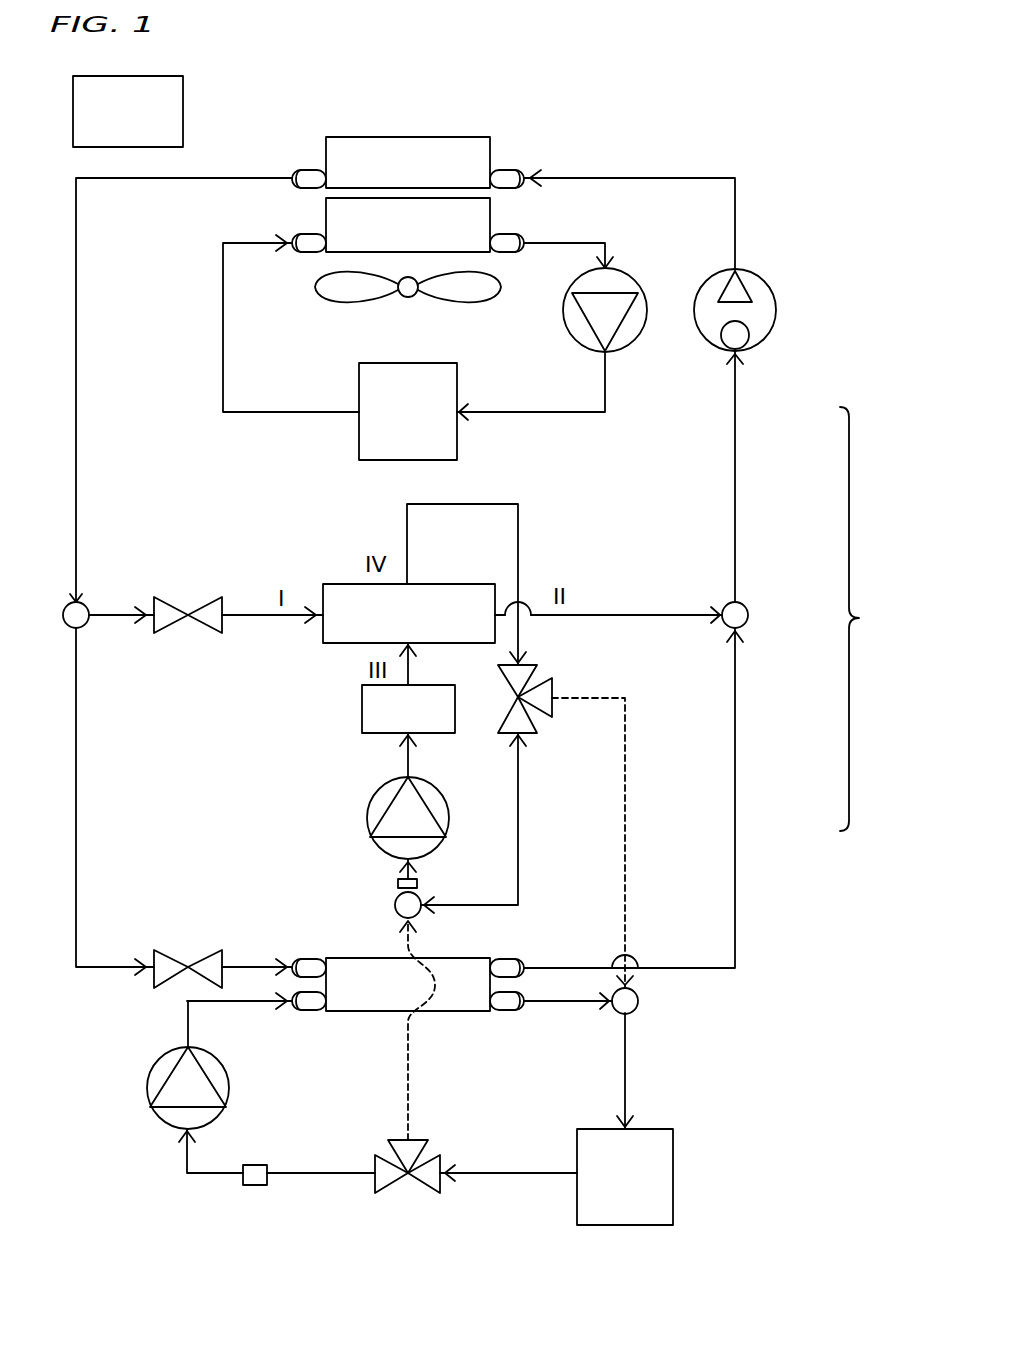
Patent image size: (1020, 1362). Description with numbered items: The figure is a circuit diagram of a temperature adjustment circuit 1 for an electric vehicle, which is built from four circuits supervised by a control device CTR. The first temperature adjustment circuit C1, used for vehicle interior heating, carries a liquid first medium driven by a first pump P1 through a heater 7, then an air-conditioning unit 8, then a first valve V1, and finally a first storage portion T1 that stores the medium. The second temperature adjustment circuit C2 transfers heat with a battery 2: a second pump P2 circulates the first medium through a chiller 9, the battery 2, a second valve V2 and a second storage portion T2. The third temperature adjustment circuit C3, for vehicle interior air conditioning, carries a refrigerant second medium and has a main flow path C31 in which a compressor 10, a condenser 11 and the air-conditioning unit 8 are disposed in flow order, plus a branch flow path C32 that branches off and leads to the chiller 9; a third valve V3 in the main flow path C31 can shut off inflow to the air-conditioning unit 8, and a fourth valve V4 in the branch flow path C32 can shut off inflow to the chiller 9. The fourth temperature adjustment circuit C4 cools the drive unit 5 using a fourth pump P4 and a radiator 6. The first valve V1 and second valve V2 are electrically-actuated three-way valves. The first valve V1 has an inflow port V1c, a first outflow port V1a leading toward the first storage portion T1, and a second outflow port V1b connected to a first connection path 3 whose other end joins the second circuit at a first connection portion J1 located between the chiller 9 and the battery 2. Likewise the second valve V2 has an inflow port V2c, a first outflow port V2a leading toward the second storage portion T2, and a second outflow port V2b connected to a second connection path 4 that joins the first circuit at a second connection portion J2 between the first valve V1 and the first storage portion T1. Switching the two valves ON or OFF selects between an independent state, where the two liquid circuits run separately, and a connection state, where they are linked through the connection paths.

The temperature adjustment circuit 1 is at (742, 145).
The battery 2 is at (673, 1173).
The first connection path 3 is at (626, 784).
The second connection path 4 is at (410, 1056).
The drive unit 5 is at (457, 445).
The radiator 6 is at (490, 215).
The heater 7 is at (362, 722).
The air-conditioning unit 8 is at (340, 583).
The chiller 9 is at (360, 1012).
The compressor 10 is at (776, 312).
The condenser 11 is at (452, 136).
The control device CTR is at (183, 118).
The first temperature adjustment circuit C1 is at (520, 556).
The second temperature adjustment circuit C2 is at (630, 1062).
The third temperature adjustment circuit C3 is at (711, 659).
The main flow path C31 is at (738, 469).
The branch flow path C32 is at (738, 824).
The fourth temperature adjustment circuit C4 is at (222, 347).
The first pump P1 is at (367, 820).
The second pump P2 is at (147, 1090).
The fourth pump P4 is at (632, 346).
The first storage portion T1 is at (398, 884).
The second storage portion T2 is at (256, 1186).
The first connection portion J1 is at (638, 1000).
The second connection portion J2 is at (395, 908).
The first valve V1 is at (561, 679).
The first outflow port V1a is at (528, 735).
The second outflow port V1b is at (548, 712).
The inflow port V1c is at (532, 663).
The second valve V2 is at (405, 1202).
The first outflow port V2a is at (375, 1187).
The second outflow port V2b is at (428, 1145).
The inflow port V2c is at (442, 1192).
The third valve V3 is at (180, 596).
The fourth valve V4 is at (172, 949).